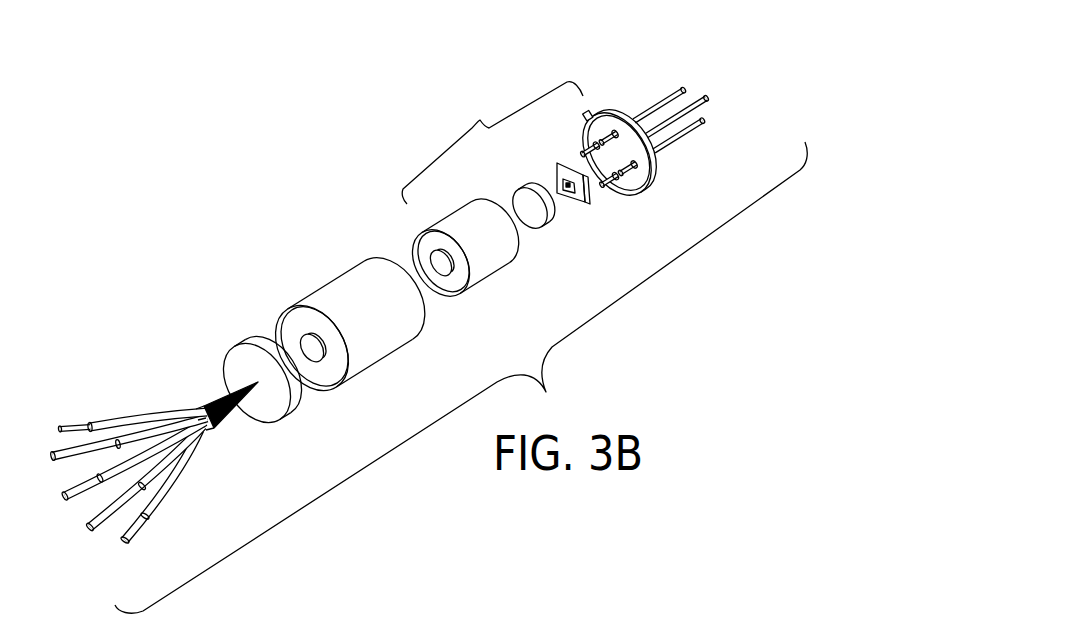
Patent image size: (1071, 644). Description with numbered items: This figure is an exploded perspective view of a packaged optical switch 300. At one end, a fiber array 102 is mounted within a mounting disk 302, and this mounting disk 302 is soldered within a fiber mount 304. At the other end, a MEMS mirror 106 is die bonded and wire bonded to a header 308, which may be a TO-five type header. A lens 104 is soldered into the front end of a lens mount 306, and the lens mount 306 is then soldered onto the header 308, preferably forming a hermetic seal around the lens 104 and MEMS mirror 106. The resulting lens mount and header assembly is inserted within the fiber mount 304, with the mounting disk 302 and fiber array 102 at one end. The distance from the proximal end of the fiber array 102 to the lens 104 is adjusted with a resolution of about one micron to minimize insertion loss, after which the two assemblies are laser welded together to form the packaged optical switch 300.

The packaged optical switch 300 is at (79, 78).
The fiber array 102 is at (197, 405).
The mounting disk 302 is at (262, 403).
The fiber mount 304 is at (380, 361).
The lens mount 306 is at (477, 292).
The lens 104 is at (547, 217).
The MEMS mirror 106 is at (587, 203).
The header 308 is at (622, 120).